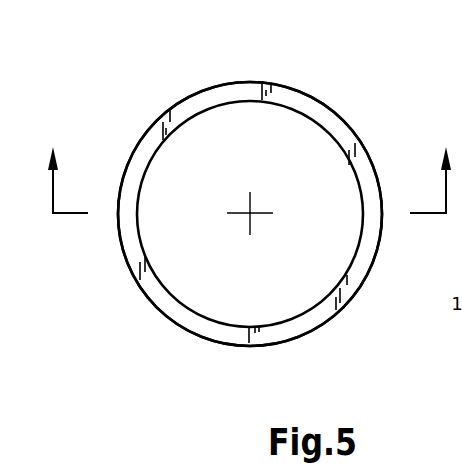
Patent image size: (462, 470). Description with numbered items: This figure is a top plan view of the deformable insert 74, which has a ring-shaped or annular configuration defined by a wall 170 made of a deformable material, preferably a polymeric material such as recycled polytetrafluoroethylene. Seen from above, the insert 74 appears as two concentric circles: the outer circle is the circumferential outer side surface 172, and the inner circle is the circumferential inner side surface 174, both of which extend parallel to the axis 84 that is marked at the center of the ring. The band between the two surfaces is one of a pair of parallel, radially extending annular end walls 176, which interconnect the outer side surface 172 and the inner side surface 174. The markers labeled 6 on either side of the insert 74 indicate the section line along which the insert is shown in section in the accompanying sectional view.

The deformable insert 74 is at (128, 89).
The wall 170 is at (216, 94).
The circumferential outer side surface 172 is at (278, 82).
The circumferential inner side surface 174 is at (324, 129).
The annular end wall 176 is at (320, 110).
The axis 84 is at (247, 217).
The section line 6- 6 is at (249, 167).